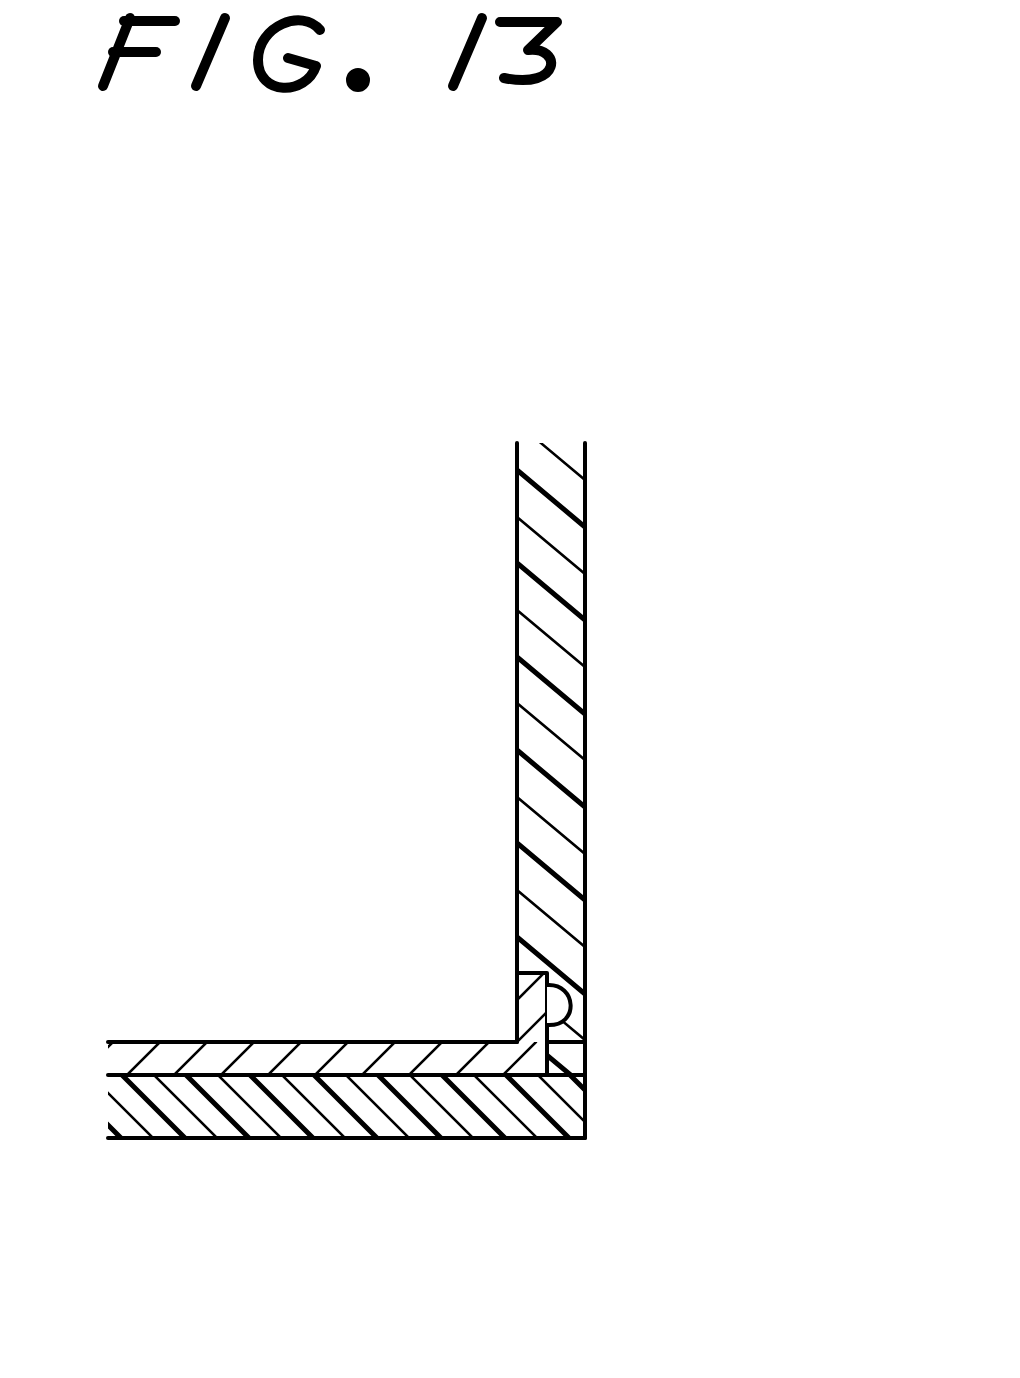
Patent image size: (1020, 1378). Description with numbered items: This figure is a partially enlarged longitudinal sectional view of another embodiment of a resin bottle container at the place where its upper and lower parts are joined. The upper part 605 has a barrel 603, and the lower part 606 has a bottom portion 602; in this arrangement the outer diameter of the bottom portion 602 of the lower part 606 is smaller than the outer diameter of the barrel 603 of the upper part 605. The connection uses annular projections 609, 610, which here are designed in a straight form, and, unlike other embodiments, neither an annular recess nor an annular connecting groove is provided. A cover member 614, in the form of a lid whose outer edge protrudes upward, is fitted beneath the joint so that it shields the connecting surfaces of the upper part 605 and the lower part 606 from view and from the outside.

The bottom portion 602 is at (177, 1062).
The barrel 603 is at (562, 808).
The upper part 605 is at (585, 581).
The lower part 606 is at (267, 1042).
The annular projection 609 is at (575, 1027).
The annular projection 610 is at (530, 992).
The cover member 614 is at (388, 1122).